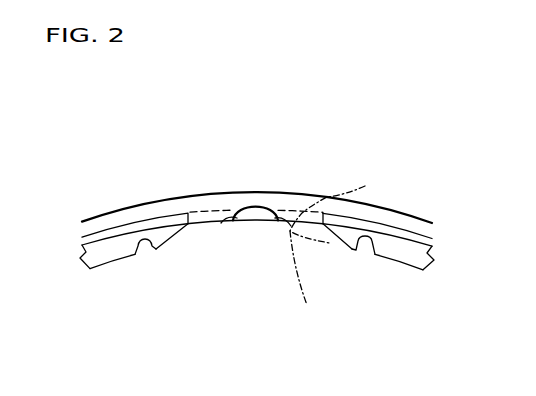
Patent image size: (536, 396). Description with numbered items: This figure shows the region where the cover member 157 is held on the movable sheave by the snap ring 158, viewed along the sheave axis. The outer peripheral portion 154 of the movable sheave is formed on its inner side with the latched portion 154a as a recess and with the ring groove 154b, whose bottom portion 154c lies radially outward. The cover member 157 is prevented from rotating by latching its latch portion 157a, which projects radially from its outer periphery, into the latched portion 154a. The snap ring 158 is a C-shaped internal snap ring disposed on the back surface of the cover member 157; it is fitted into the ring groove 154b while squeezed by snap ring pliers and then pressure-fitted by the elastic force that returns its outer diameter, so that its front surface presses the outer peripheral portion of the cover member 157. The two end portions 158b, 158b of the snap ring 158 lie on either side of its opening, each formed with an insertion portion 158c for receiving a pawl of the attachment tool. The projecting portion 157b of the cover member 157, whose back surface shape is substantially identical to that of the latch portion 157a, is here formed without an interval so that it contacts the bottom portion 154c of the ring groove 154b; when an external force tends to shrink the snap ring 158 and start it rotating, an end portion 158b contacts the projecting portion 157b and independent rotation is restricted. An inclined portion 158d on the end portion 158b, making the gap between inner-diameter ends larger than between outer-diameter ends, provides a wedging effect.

The outer peripheral portion 154 is at (170, 199).
The latched portion 154a is at (247, 208).
The ring groove 154b is at (206, 214).
The bottom portion 154c is at (225, 211).
The cover member 157 is at (233, 367).
The latch portion 157a is at (283, 222).
The projecting portion 157b is at (266, 207).
The snap ring 158 is at (105, 257).
The end portion 158b is at (160, 218).
The insertion portion 158c is at (141, 248).
The inclined portion 158d is at (177, 233).